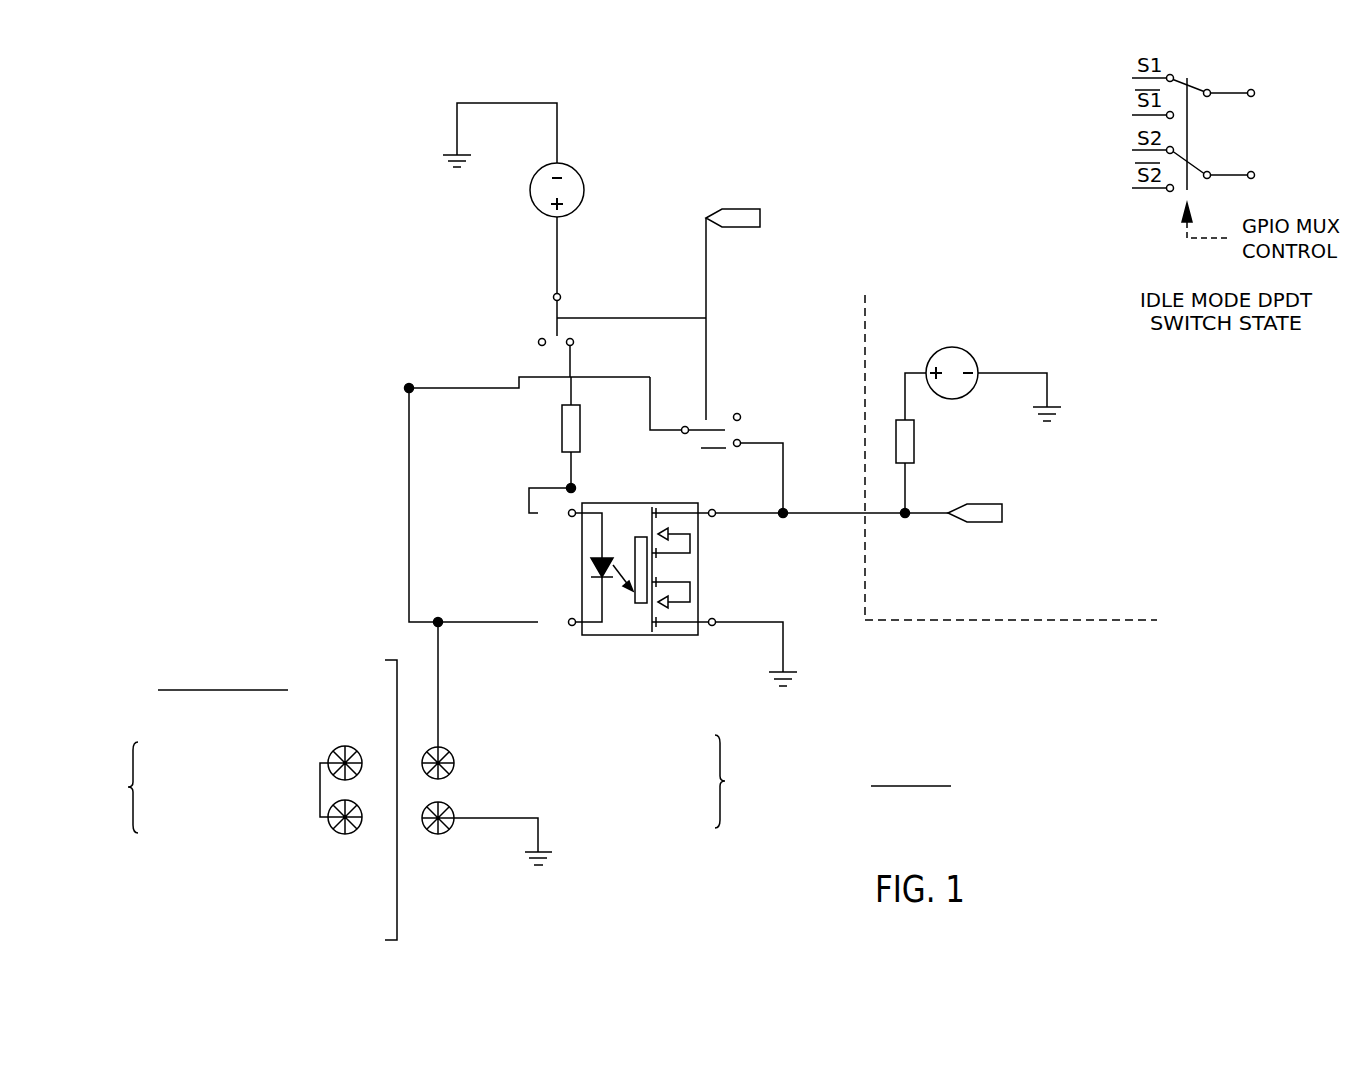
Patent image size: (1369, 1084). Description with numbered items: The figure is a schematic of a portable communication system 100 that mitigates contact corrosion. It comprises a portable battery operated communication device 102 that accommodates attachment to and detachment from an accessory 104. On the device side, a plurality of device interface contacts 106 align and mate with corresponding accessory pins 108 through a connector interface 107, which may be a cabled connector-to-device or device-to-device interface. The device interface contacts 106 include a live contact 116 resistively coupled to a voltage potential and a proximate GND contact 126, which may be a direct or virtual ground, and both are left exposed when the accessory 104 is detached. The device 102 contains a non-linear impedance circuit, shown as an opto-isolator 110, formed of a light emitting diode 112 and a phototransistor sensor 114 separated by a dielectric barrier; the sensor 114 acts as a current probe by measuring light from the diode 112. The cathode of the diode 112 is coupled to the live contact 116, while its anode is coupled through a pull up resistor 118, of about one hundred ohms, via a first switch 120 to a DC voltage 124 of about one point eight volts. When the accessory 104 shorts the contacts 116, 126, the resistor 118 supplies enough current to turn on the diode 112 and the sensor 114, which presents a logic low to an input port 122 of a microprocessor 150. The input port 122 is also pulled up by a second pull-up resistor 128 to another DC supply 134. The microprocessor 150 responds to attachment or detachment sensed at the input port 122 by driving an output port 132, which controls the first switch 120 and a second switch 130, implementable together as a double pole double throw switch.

The portable communication system 100 is at (247, 139).
The portable battery operated communication device 102 is at (1003, 786).
The accessory 104 is at (140, 690).
The device interface contacts 106 is at (724, 782).
The connector interface 107 is at (395, 921).
The accessory pins 108 is at (127, 788).
The opto-isolator 110 is at (640, 602).
The light emitting diode 112 is at (596, 556).
The sensor 114 is at (698, 555).
The live contact 116 is at (450, 753).
The pull up resistor 118 is at (582, 432).
The first switch 120 is at (560, 316).
The input port 122 is at (1003, 514).
The DC voltage 124 is at (530, 194).
The GND contact 126 is at (436, 835).
The second pull-up resistor 128 is at (915, 463).
The second switch 130 is at (745, 436).
The output port 132 is at (762, 218).
The DC supply 134 is at (972, 356).
The microprocessor 150 is at (1010, 620).